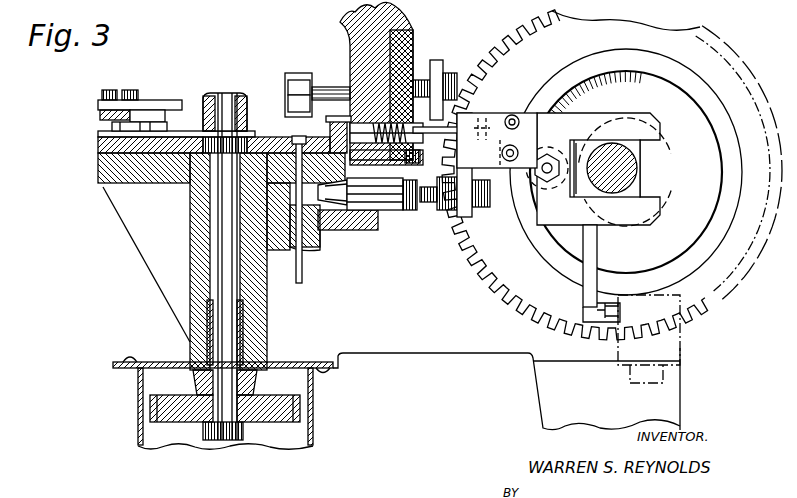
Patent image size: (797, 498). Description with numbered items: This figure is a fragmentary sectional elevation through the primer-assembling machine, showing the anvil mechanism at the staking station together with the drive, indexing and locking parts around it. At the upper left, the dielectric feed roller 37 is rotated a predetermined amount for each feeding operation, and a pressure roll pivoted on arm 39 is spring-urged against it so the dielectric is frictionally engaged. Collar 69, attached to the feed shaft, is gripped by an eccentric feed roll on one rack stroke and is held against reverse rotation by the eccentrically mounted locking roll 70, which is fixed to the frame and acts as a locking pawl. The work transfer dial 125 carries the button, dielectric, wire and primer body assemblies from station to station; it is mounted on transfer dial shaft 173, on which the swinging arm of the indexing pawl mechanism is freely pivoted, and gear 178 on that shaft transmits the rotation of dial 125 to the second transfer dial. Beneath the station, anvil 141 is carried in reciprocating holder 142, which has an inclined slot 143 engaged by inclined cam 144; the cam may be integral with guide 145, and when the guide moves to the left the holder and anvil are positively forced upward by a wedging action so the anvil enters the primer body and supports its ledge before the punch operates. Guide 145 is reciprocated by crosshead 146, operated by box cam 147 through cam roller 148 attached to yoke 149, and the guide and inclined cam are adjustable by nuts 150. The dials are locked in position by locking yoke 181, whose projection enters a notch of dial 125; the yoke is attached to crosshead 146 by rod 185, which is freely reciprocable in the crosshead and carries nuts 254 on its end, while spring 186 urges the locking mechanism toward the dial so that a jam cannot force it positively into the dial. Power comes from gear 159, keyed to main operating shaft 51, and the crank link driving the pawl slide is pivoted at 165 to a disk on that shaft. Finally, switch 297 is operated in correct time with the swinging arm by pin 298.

The roller 37 is at (293, 73).
The arm 39 is at (290, 92).
The main operating shaft 51 is at (625, 168).
The collar 69 is at (437, 70).
The locking roll 70 is at (448, 80).
The transfer dial 125 is at (100, 134).
The anvil 141 is at (282, 240).
The reciprocating holder 142 is at (308, 250).
The inclined slot 143 is at (335, 240).
The inclined cam 144 is at (410, 218).
The guide 145 is at (435, 217).
The crosshead 146 is at (470, 118).
The box cam 147 is at (716, 131).
The cam roller 148 is at (552, 150).
The yoke 149 is at (599, 108).
The nuts 150 is at (480, 207).
The gear 159 is at (515, 294).
The pivot 165 is at (600, 2).
The transfer dial shaft 173 is at (215, 238).
The gear 178 is at (277, 415).
The locking yoke 181 is at (335, 118).
The rod 185 is at (512, 200).
The spring 186 is at (395, 33).
The nuts 254 is at (507, 116).
The switch 297 is at (680, 345).
The pin 298 is at (583, 288).